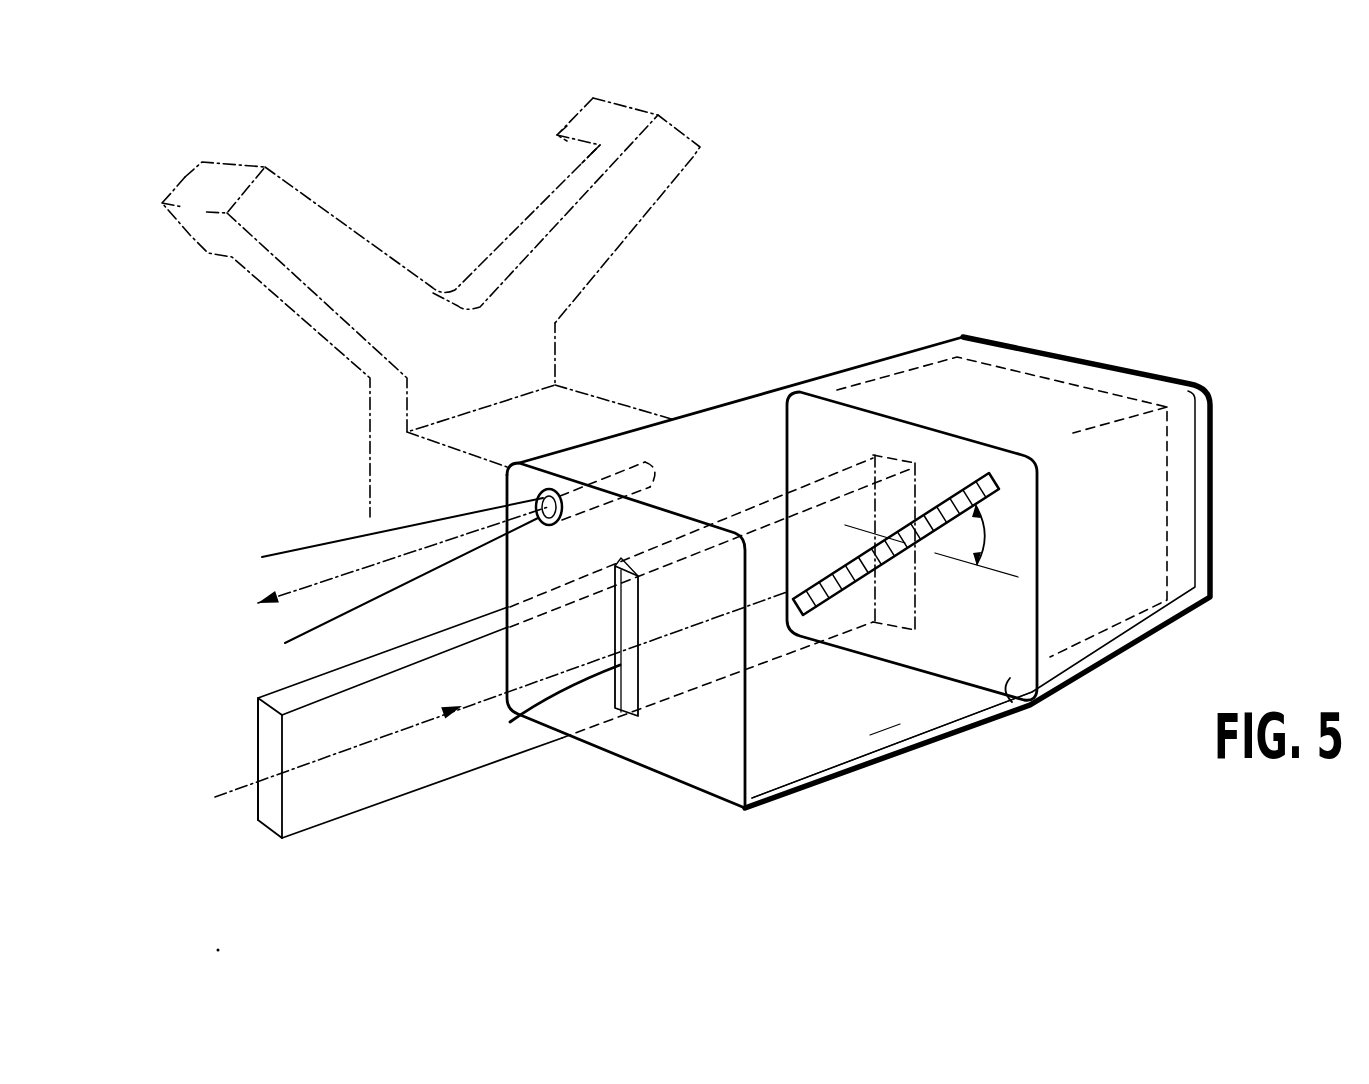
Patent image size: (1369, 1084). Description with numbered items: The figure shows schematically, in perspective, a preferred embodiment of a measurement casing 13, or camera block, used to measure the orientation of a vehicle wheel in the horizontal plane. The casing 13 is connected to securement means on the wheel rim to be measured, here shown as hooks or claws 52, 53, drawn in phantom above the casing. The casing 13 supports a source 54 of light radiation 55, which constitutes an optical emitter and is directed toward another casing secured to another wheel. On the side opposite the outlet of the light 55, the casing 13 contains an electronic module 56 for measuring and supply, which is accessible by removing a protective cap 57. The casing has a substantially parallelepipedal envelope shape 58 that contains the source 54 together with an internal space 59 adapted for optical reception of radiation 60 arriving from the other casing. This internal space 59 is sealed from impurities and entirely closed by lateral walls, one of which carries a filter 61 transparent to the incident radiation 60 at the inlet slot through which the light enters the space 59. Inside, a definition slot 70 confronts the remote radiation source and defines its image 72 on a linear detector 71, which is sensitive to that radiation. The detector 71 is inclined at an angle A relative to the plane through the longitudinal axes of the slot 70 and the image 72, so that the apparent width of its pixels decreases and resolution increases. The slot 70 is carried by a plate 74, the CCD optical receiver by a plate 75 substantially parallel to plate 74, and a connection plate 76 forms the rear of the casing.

The measurement casing 13 is at (1224, 503).
The hook 52 is at (240, 141).
The hook 53 is at (541, 124).
The source 54 is at (540, 500).
The light radiation 55 is at (267, 632).
The electronic module 56 is at (1115, 392).
The protective cap 57 is at (1030, 348).
The envelope shape 58 is at (572, 787).
The internal space 59 is at (783, 727).
The radiation 60 is at (244, 835).
The filter 61 is at (510, 722).
The definition slot 70 is at (633, 680).
The linear detector 71 is at (963, 493).
The image 72 is at (896, 460).
The plate 74 is at (742, 762).
The plate 75 is at (1008, 700).
The connection plate 76 is at (877, 730).